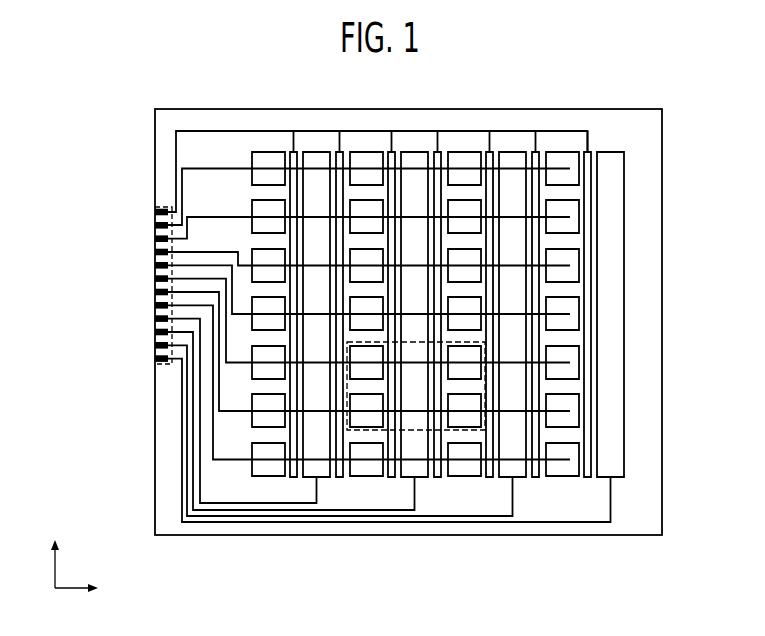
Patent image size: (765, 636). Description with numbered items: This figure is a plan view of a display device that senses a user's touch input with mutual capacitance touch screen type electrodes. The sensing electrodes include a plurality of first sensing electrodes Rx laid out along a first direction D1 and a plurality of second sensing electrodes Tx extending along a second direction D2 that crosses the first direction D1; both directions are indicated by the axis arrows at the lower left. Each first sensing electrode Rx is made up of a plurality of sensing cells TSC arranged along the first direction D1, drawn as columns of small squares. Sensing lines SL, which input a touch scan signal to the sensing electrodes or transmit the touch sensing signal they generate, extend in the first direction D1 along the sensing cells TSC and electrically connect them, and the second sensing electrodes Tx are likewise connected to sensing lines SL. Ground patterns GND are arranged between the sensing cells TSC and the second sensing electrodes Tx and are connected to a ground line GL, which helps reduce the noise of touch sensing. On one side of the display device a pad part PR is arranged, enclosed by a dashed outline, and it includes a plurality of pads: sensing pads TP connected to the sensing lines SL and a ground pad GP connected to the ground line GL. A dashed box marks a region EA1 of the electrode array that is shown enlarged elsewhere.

The ground line GL is at (210, 130).
The second sensing electrode Tx is at (512, 140).
The first sensing electrode Rx is at (588, 168).
The sensing cell TSC is at (568, 273).
The ground pad GP is at (155, 213).
The sensing pad TP is at (155, 357).
The pad part PR is at (167, 368).
The sensing line SL is at (235, 523).
The ground pattern GND is at (585, 478).
The region EA1 is at (415, 432).
The first direction D1 is at (87, 590).
The second direction D2 is at (55, 550).